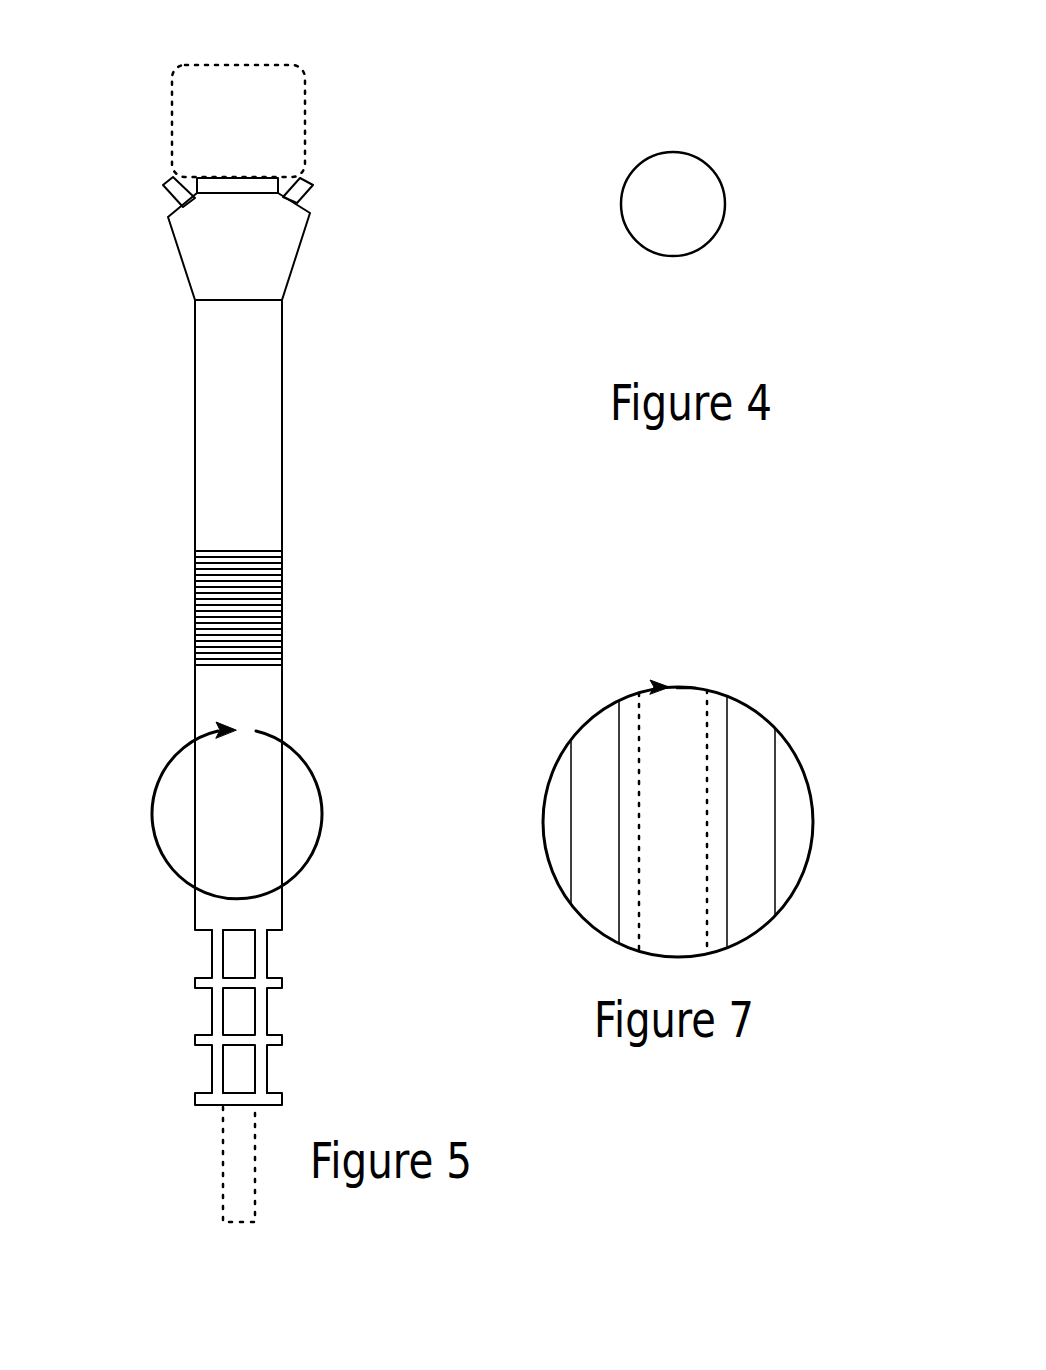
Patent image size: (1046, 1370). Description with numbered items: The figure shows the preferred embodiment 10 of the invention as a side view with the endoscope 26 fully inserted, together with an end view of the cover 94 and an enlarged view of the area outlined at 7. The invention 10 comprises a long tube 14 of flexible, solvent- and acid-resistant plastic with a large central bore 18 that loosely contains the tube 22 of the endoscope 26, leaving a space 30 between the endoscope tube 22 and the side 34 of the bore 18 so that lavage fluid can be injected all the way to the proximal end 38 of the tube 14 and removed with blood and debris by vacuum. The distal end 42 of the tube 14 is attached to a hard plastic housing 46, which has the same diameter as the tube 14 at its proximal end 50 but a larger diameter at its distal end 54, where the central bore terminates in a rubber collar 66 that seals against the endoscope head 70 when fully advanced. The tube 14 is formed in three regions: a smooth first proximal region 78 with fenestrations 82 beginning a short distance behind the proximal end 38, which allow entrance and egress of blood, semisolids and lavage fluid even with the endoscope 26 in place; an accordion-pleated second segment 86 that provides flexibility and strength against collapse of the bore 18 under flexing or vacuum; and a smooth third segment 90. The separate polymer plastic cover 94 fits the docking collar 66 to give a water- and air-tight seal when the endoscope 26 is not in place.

In FIG. 5, the preferred embodiment of the invention 10 is at (418, 488).
In FIG. 5, the long tube 14 is at (255, 467).
In FIG. 7, the long tube 14 is at (754, 884).
In FIG. 7, the large central bore 18 is at (729, 957).
In FIG. 5, the tube of an endoscope 22 is at (232, 1160).
In FIG. 7, the tube of an endoscope 22 is at (689, 719).
In FIG. 5, the endoscope 26 is at (368, 117).
In FIG. 7, the space 30 is at (627, 713).
In FIG. 7, the side of the bore 34 is at (722, 798).
In FIG. 5, the proximal end of the tube 38 is at (205, 1105).
In FIG. 5, the distal end of the tube 42 is at (255, 303).
In FIG. 5, the housing 46 is at (277, 240).
In FIG. 5, the proximal end of the housing 50 is at (215, 300).
In FIG. 5, the distal end of the housing 54 is at (247, 197).
In FIG. 5, the rubber collar 66 is at (205, 183).
In FIG. 5, the endoscope head 70 is at (272, 85).
In FIG. 5, the first proximal region 78 is at (147, 1089).
In FIG. 5, the fenestrations 82 is at (238, 958).
In FIG. 5, the second segment 86 is at (310, 543).
In FIG. 5, the third segment 90 is at (170, 565).
In FIG. 4, the polymer plastic cover 94 is at (698, 207).
In FIG. 5, the section view indicator 7 is at (237, 810).